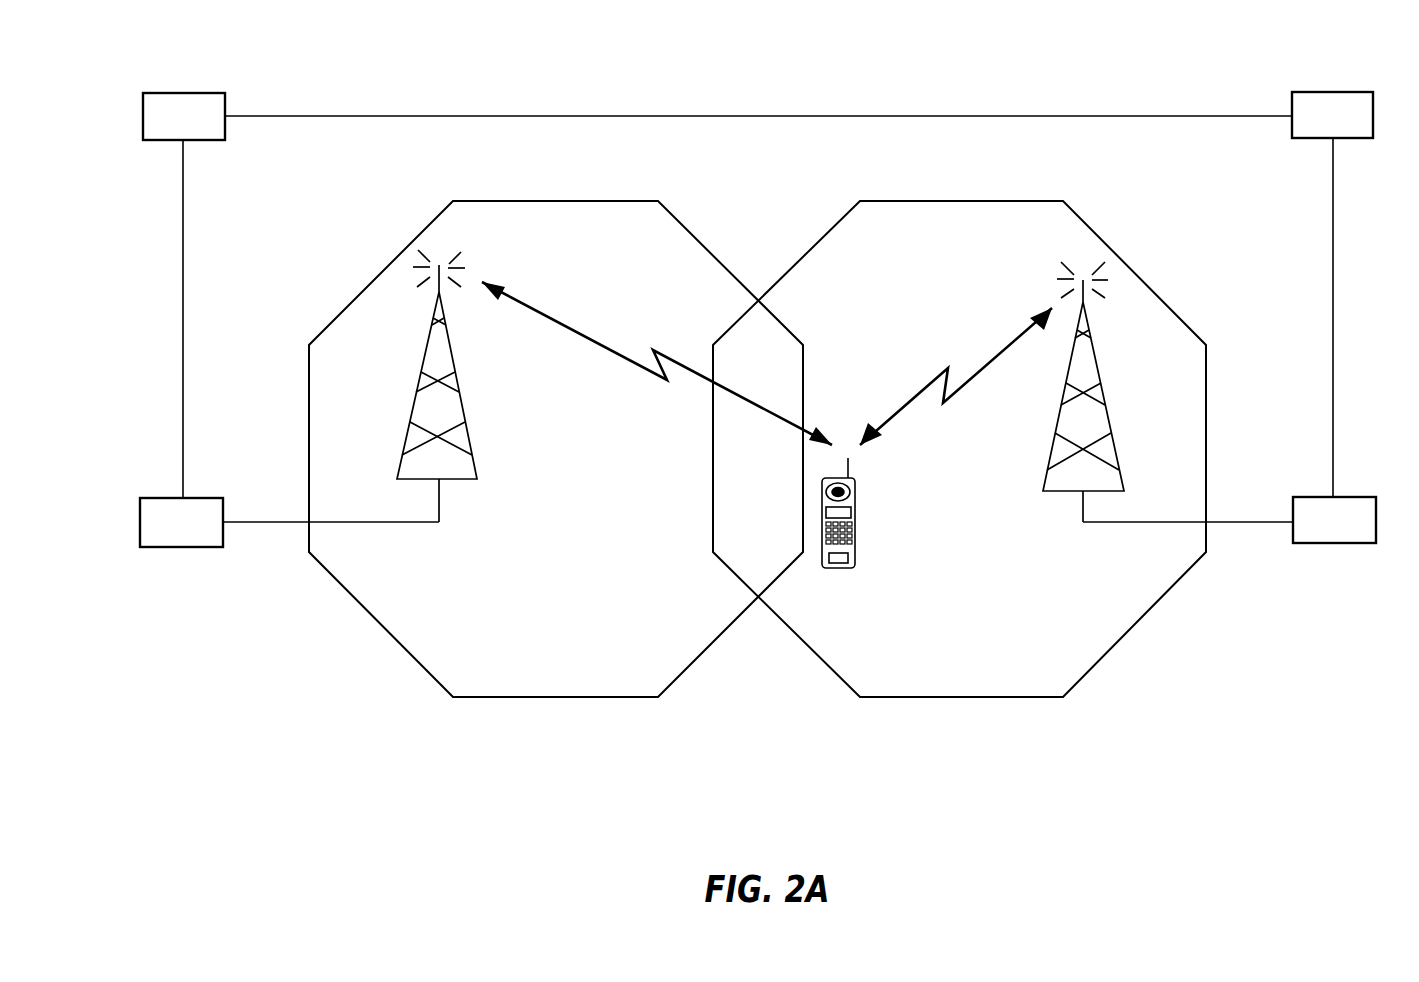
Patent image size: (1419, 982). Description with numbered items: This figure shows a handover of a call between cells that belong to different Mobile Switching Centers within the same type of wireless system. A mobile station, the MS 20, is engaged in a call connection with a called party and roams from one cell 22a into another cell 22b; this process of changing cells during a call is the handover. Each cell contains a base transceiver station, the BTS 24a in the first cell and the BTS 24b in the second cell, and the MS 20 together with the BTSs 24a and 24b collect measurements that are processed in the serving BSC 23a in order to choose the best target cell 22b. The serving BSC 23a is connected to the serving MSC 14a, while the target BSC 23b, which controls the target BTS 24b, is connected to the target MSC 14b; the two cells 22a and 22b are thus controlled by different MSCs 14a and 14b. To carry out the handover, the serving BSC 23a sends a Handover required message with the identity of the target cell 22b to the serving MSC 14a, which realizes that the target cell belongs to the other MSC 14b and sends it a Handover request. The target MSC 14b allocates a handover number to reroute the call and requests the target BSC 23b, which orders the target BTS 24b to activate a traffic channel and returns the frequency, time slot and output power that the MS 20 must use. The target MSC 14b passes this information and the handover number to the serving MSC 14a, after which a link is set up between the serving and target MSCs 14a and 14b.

The serving MSC 14a is at (170, 92).
The target MSC 14b is at (1317, 92).
The serving BSC 23a is at (155, 547).
The target BSC 23b is at (1308, 543).
The BTS 24a is at (475, 462).
The target BTS 24b is at (1047, 470).
The cell 22a is at (556, 449).
The target cell 22b is at (959, 449).
The MS 20 is at (855, 495).